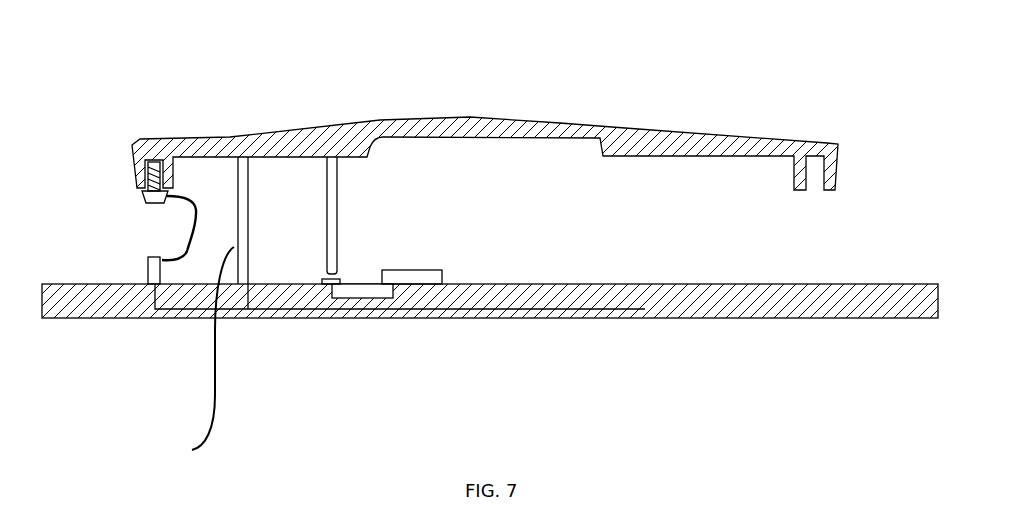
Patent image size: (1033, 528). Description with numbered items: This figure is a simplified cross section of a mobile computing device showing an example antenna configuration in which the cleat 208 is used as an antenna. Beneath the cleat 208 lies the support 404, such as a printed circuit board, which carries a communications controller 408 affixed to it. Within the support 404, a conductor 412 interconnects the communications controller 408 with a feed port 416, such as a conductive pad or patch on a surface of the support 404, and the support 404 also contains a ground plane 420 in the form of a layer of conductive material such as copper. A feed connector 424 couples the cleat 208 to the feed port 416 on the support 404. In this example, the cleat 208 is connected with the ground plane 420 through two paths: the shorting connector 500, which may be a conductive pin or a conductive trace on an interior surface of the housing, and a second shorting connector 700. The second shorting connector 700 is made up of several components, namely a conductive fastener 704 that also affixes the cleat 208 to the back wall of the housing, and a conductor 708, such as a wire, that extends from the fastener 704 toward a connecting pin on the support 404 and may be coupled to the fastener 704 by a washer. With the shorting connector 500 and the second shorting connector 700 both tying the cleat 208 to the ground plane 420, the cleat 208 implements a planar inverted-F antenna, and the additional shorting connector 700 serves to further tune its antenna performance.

The cleat 208 is at (848, 145).
The fastener 704 is at (152, 158).
The conductor 708 is at (188, 234).
The second shorting connector 700 is at (134, 254).
The support 404 is at (290, 318).
The feed connector 424 is at (360, 202).
The communications controller 408 is at (443, 277).
The conductor 412 is at (375, 298).
The feed port 416 is at (324, 284).
The ground plane 420 is at (571, 309).
The shorting connector 500 is at (190, 354).